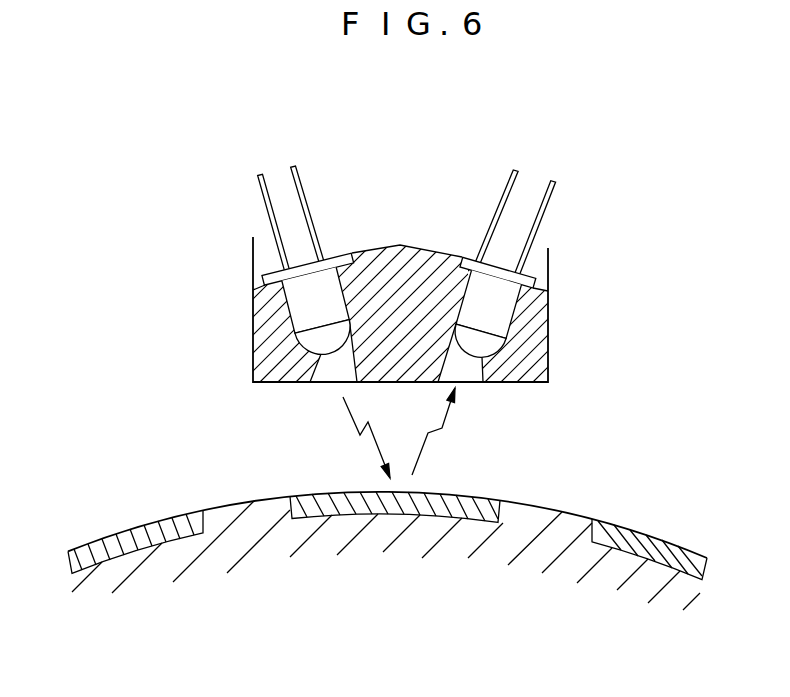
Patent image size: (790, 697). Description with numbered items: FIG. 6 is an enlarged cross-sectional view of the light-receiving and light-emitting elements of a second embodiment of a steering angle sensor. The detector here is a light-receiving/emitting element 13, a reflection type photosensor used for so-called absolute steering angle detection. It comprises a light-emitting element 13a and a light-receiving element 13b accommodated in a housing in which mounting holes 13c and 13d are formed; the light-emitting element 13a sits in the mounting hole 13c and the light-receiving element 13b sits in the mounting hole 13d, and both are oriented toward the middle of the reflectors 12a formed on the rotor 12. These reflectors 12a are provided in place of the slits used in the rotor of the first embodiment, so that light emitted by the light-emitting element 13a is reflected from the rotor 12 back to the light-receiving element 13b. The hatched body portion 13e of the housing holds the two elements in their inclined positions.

The rotor 12 is at (237, 506).
The reflector 12a is at (468, 498).
The light-receiving/emitting element 13 is at (587, 266).
The light-emitting element 13a is at (325, 286).
The light-receiving element 13b is at (481, 288).
The mounting hole 13c is at (322, 366).
The mounting hole 13d is at (470, 375).
The sensor holder 13e is at (550, 338).